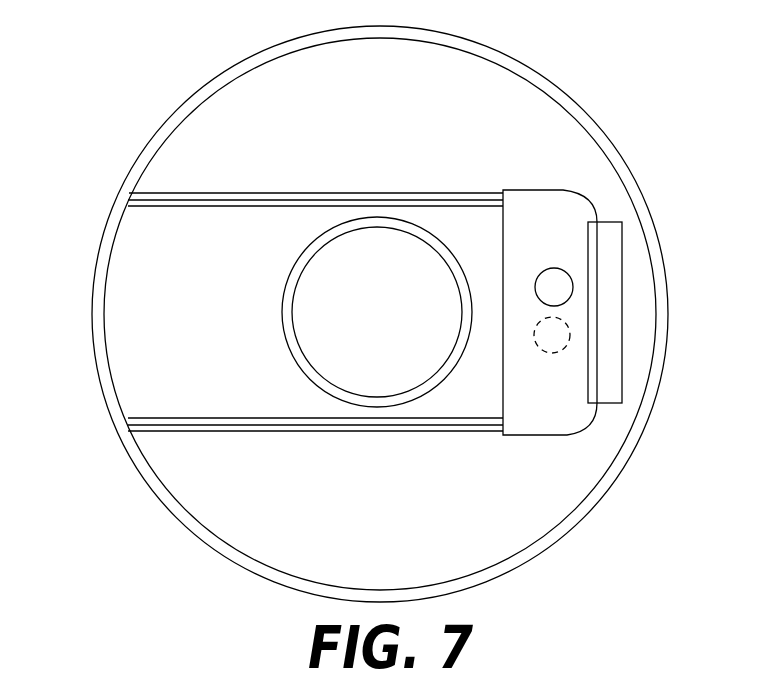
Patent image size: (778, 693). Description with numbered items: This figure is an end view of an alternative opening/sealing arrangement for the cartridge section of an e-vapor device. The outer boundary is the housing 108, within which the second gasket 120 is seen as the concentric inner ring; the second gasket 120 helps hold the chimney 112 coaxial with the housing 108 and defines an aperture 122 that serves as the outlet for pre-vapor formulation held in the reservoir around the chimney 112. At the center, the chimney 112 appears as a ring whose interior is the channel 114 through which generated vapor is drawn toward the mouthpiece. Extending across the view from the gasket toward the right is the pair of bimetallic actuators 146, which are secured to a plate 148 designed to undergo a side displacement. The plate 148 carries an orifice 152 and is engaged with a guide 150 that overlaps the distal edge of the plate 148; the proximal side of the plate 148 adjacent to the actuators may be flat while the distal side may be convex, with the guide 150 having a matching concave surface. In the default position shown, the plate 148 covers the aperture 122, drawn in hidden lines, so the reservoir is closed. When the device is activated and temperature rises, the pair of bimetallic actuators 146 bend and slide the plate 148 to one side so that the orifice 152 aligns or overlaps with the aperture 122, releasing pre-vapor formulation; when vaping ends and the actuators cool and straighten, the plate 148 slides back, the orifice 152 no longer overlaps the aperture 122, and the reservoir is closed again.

The housing 108 is at (548, 76).
The second gasket 120 is at (583, 148).
The pair of bimetallic actuators 146 is at (208, 175).
The chimney 112 is at (296, 267).
The channel 114 is at (323, 327).
The plate 148 is at (567, 210).
The guide 150 is at (613, 261).
The orifice 152 is at (562, 292).
The aperture 122 is at (560, 336).